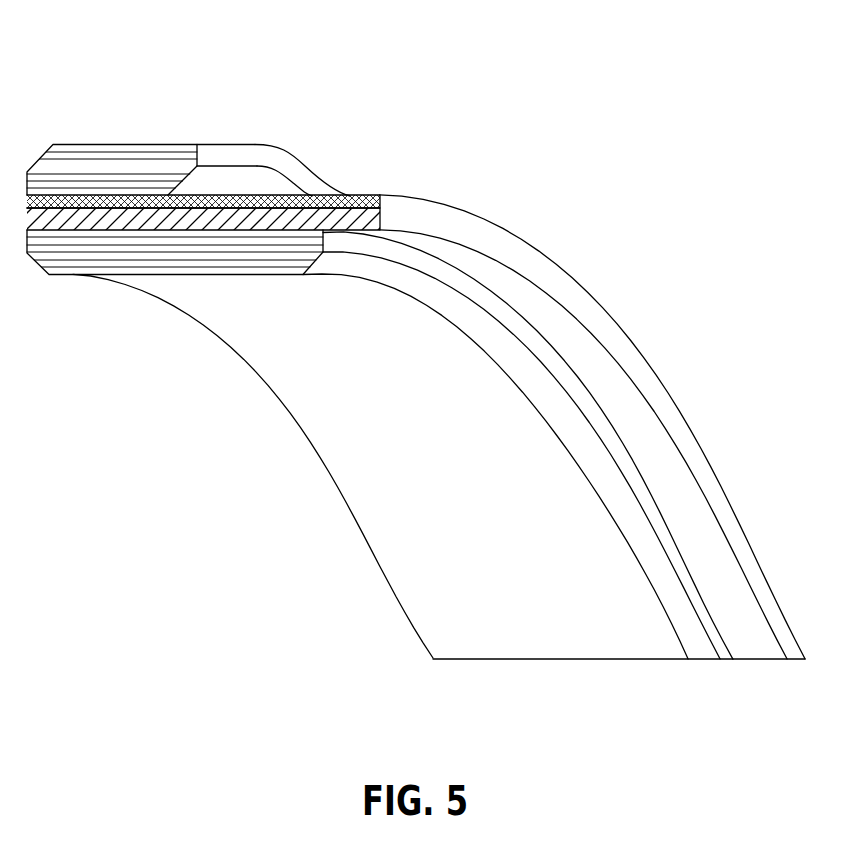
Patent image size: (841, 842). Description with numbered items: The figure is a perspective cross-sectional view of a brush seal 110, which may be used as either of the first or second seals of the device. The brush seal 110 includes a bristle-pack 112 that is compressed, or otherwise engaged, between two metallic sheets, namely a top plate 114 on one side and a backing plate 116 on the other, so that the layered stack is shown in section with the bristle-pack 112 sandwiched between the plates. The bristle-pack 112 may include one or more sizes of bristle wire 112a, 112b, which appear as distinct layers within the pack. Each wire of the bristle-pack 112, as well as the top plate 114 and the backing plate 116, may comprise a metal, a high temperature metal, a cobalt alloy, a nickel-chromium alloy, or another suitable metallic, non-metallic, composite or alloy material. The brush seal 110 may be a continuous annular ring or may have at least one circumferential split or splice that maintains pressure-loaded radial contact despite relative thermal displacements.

The brush seal 110 is at (603, 65).
The bristle-pack 112 is at (515, 117).
The bristle wire 112a is at (367, 195).
The bristle wire 112b is at (380, 222).
The top plate 114 is at (88, 157).
The backing plate 116 is at (80, 247).